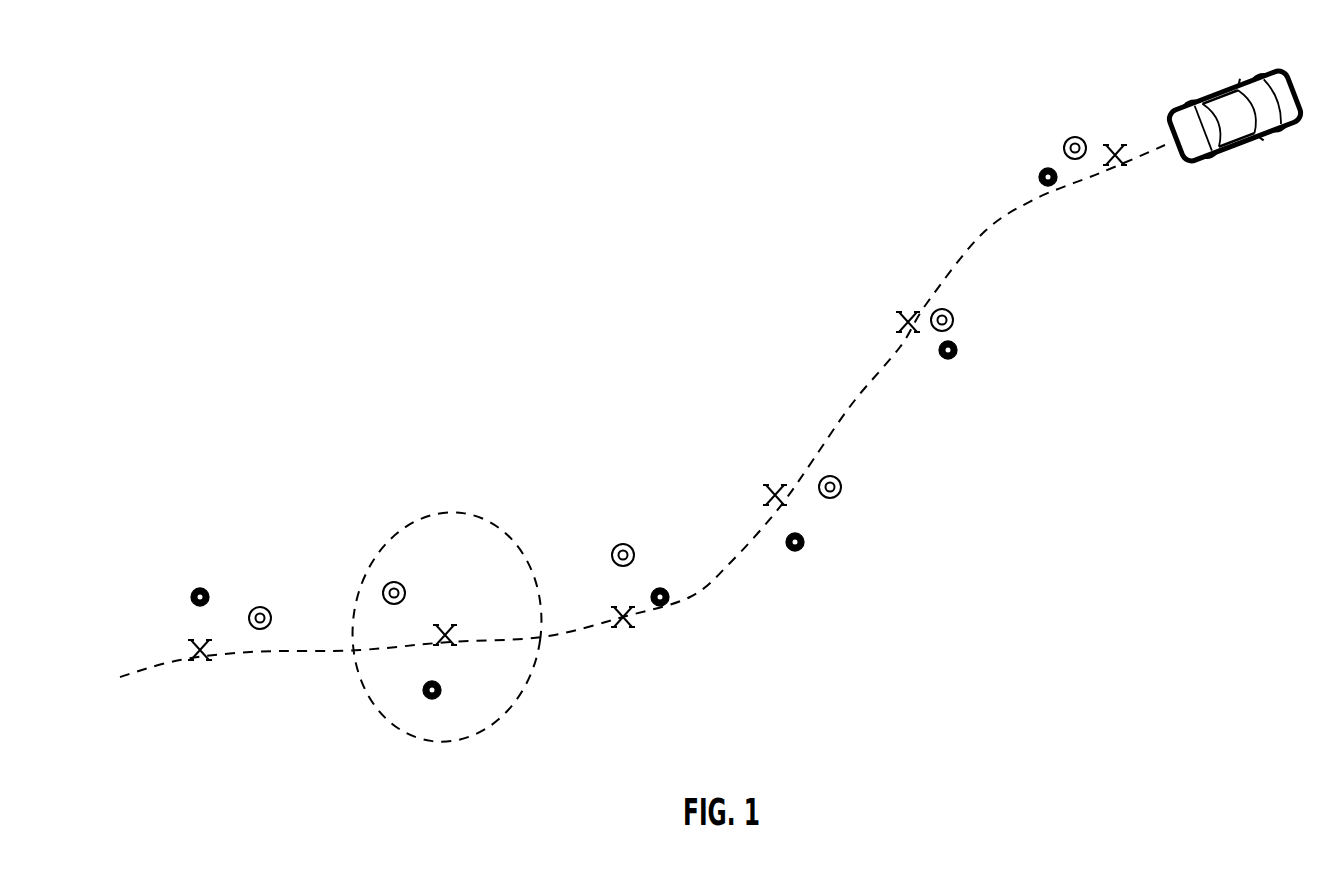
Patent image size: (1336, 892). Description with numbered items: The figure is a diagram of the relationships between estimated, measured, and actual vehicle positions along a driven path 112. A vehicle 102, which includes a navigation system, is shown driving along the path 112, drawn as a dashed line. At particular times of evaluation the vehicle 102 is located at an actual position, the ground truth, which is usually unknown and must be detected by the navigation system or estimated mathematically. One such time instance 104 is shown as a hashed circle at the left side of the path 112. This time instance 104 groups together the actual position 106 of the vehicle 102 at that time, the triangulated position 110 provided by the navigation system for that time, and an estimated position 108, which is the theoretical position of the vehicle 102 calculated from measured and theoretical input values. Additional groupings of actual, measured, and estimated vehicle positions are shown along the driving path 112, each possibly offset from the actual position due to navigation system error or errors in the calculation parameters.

The vehicle 102 is at (1268, 73).
The time instance (t) 104 is at (403, 513).
The actual position 106 is at (452, 624).
The estimated position 108 is at (434, 681).
The triangulated position 110 is at (394, 582).
The path 112 is at (988, 235).